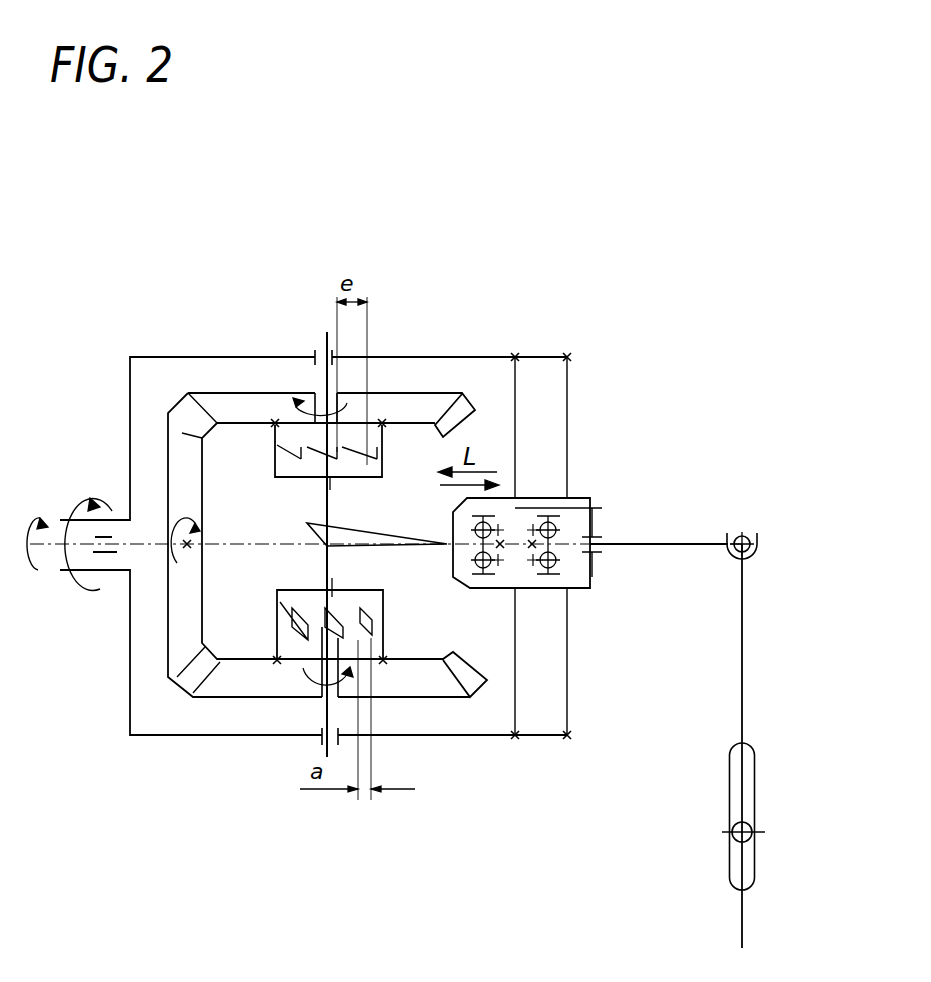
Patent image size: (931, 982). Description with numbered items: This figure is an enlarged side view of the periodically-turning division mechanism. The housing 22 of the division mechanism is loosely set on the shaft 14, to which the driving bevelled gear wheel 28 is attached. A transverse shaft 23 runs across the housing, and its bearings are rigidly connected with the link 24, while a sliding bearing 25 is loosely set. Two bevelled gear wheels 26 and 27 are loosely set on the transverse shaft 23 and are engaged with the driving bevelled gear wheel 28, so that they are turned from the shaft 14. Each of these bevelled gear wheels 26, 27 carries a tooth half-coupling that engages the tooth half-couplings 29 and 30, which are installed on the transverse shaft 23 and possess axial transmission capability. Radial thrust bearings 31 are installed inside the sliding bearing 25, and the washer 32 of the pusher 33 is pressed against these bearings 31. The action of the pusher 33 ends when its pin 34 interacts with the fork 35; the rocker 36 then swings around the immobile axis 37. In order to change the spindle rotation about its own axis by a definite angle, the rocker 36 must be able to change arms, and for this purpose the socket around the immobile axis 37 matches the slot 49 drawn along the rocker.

The shaft 14 is at (113, 509).
The housing 22 is at (138, 358).
The transverse shaft 23 is at (330, 507).
The link 24 is at (395, 538).
The sliding bearing 25 is at (498, 500).
The bevelled gear wheel 26 is at (243, 407).
The bevelled gear wheel 27 is at (283, 682).
The driving bevelled gear wheel 28 is at (183, 433).
The tooth half-coupling 29 is at (308, 460).
The tooth half-coupling 30 is at (287, 602).
The radial thrust bearings 31 is at (500, 543).
The washer 32 is at (573, 533).
The pusher 33 is at (668, 543).
The pin 34 is at (747, 543).
The fork 35 is at (758, 548).
The rocker 36 is at (742, 706).
The immobile axis 37 is at (752, 828).
The slot 49 is at (743, 875).